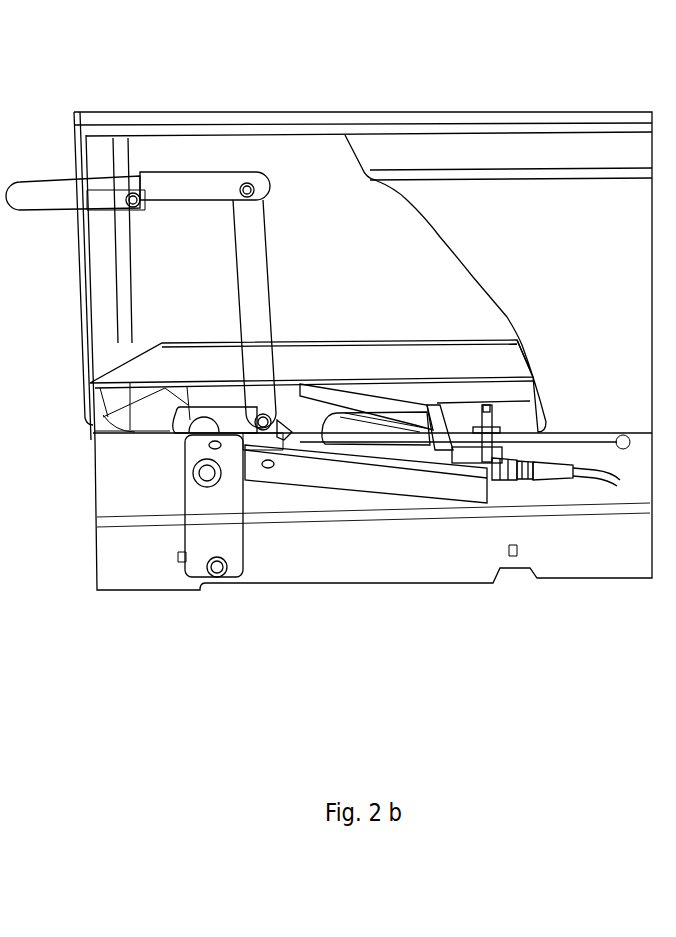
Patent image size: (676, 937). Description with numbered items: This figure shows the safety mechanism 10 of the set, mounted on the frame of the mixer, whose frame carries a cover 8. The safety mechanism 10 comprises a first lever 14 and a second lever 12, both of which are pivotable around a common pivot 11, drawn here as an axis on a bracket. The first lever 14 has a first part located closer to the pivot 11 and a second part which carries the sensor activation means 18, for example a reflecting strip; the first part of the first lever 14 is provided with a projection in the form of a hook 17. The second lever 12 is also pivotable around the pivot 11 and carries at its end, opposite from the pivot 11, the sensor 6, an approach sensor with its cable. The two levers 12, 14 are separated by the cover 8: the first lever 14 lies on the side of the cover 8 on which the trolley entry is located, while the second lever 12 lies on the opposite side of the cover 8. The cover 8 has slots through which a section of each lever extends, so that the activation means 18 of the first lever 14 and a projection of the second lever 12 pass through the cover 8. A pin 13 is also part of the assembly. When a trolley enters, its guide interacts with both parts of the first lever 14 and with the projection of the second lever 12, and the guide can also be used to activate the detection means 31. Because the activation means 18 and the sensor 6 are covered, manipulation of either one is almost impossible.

The sensor 6 is at (543, 470).
The cover 8 is at (588, 503).
The safety mechanism 10 is at (447, 507).
The pivot 11 is at (198, 482).
The second lever 12 is at (372, 472).
The pin 13 is at (268, 471).
The first lever 14 is at (327, 398).
The hook 17 is at (272, 438).
The sensor activation means 18 is at (448, 445).
The detection means 31 is at (477, 515).